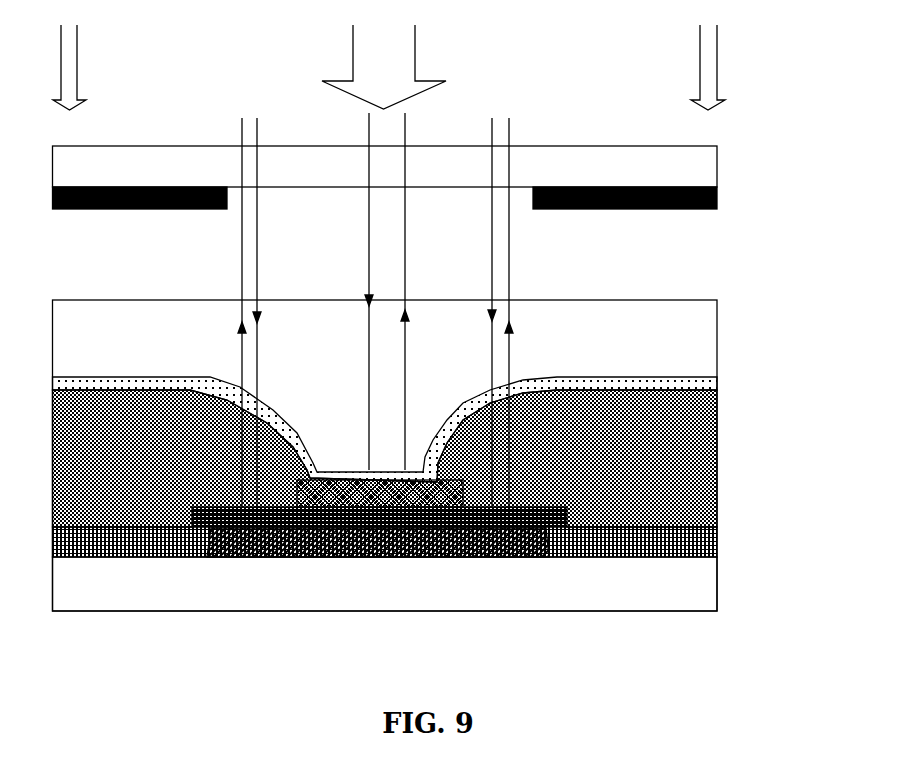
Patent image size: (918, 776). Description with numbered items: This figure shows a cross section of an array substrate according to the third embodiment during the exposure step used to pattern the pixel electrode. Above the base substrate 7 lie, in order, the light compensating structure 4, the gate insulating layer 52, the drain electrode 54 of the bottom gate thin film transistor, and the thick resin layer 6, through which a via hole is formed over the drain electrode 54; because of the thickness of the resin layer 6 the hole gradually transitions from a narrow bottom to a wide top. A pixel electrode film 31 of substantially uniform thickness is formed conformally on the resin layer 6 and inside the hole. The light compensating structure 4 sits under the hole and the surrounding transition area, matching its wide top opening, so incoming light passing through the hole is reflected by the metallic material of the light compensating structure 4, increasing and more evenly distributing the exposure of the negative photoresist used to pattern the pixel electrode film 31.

The pixel electrode film 31 is at (700, 388).
The resin layer 6 is at (700, 442).
The drain electrode 54 is at (423, 500).
The gate insulating layer 52 is at (702, 543).
The base substrate 7 is at (700, 593).
The light compensating structure 4 is at (418, 542).